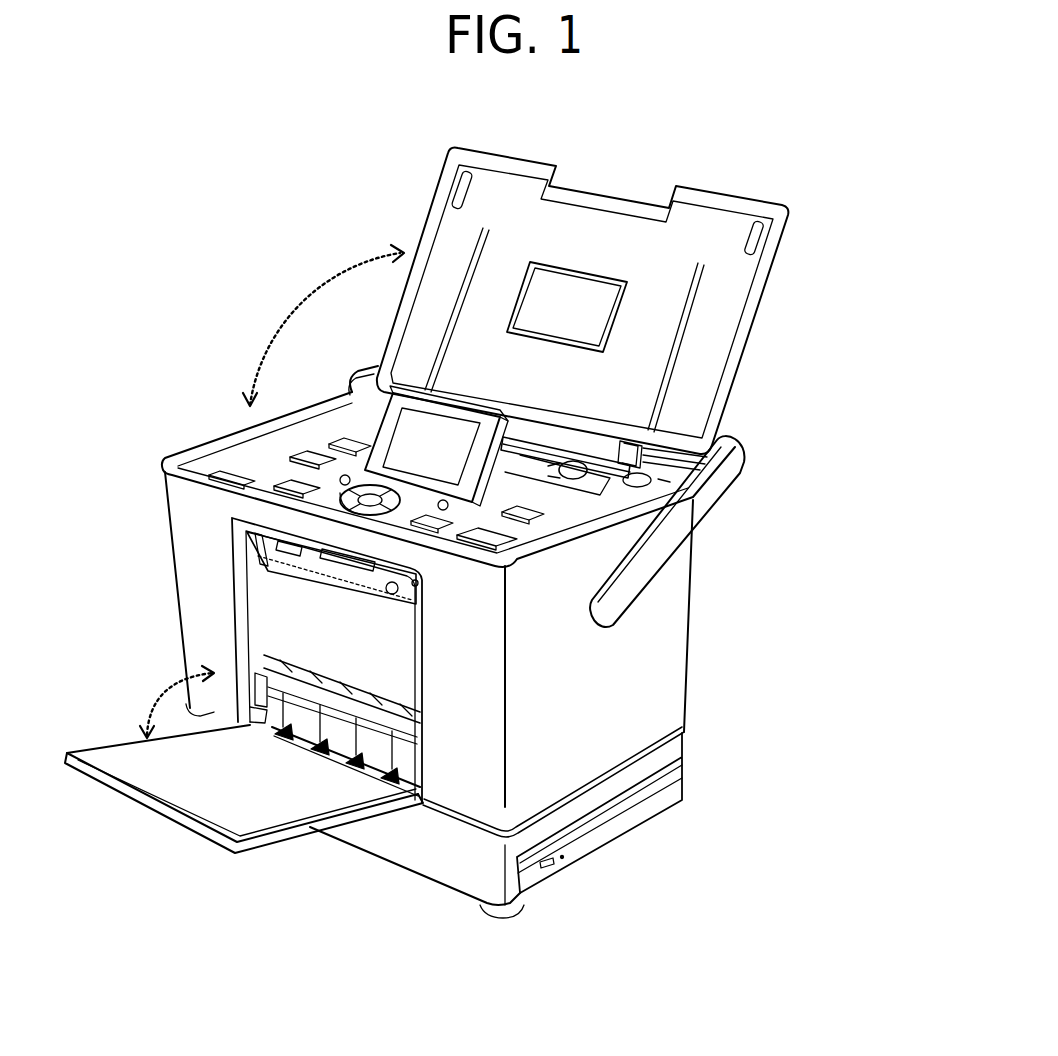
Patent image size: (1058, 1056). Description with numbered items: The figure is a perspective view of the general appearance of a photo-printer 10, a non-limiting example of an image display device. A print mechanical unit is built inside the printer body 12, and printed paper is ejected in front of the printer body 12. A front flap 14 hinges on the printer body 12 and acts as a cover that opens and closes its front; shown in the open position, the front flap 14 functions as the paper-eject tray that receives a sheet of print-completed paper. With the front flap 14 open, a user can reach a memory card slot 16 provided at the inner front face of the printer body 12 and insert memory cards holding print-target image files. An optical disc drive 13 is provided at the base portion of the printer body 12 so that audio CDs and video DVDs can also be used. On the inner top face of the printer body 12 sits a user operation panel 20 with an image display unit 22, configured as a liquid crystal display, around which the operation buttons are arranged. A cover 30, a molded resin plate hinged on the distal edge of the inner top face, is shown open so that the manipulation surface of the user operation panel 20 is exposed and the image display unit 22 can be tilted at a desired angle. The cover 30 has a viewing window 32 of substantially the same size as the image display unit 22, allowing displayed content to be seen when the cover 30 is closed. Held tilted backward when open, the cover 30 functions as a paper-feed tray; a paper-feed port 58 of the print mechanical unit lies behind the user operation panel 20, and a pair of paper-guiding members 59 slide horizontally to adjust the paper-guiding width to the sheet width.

The photo-printer 10 is at (845, 240).
The printer body 12 is at (662, 663).
The optical disc drive 13 is at (682, 783).
The front flap 14 is at (287, 810).
The memory card slot 16 is at (333, 570).
The user operation panel 20 is at (253, 457).
The image display unit 22 is at (445, 458).
The cover 30 is at (720, 223).
The viewing window 32 is at (580, 295).
The paper-feed port 58 is at (510, 455).
The paper-guiding members 59 is at (600, 506).